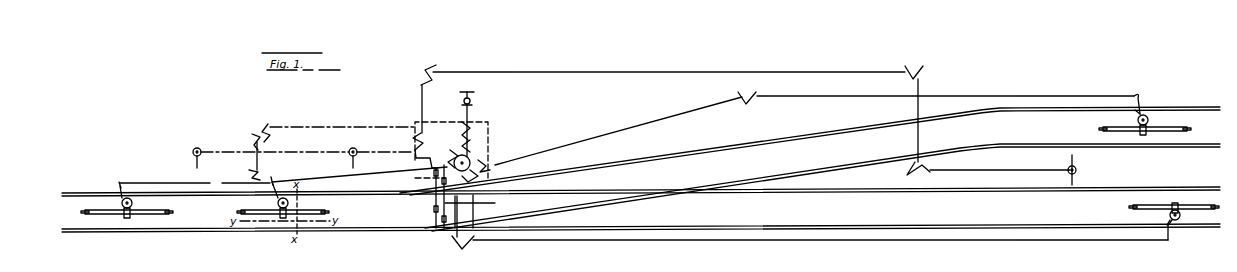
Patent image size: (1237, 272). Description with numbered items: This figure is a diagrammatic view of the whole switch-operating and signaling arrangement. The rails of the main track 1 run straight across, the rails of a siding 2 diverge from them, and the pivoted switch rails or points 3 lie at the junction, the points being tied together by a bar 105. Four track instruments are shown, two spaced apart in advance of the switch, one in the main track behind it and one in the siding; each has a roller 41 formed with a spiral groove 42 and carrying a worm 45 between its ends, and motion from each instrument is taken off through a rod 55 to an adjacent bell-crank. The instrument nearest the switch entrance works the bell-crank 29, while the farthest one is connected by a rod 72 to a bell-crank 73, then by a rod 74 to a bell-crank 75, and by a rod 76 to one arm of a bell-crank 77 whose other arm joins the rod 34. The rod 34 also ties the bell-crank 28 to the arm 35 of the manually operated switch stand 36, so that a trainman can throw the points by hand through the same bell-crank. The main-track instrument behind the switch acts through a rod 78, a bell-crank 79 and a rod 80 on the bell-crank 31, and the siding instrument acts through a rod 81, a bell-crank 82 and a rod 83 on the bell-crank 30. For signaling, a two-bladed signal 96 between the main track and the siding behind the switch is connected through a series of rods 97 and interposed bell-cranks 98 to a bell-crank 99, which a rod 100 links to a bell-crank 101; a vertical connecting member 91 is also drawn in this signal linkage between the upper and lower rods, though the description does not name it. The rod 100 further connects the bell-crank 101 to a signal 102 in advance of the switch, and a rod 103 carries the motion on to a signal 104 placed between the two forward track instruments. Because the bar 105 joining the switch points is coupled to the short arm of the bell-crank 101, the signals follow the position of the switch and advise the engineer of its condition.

The rails of the main track 1 is at (1027, 190).
The rails of a siding 2 is at (1050, 112).
The pivoted switch rails or points 3 is at (434, 202).
The bell-crank 28 is at (482, 152).
The bell-crank 29 is at (448, 154).
The bell-crank 30 is at (496, 168).
The bell-crank 31 is at (488, 177).
The rod 34 is at (490, 126).
The arm 35 is at (472, 110).
The manually operated switch stand 36 is at (464, 91).
The roller 41 is at (650, 167).
The spiral groove 42 is at (178, 205).
The worm 45 is at (128, 218).
The rod 55 is at (359, 177).
The rod 72 is at (195, 175).
The bell-crank 73 is at (248, 170).
The rod 74 is at (256, 146).
The bell-crank 75 is at (269, 123).
The rod 76 is at (329, 125).
The bell-crank 77 is at (455, 137).
The rod 78 is at (822, 237).
The bell-crank 79 is at (468, 247).
The rod 80 is at (465, 207).
The rod 81 is at (1008, 95).
The bell-crank 82 is at (755, 101).
The rod 83 is at (618, 131).
The wire 91 is at (920, 131).
The signal 96 is at (1076, 166).
The rods 97 is at (812, 70).
The bell-cranks 98 is at (938, 163).
The bell-crank 99 is at (410, 138).
The rod 100 is at (384, 144).
The bell-crank 101 is at (414, 154).
The signal 102 is at (342, 150).
The rod 103 is at (302, 143).
The signal 104 is at (269, 150).
The bar 105 is at (436, 196).